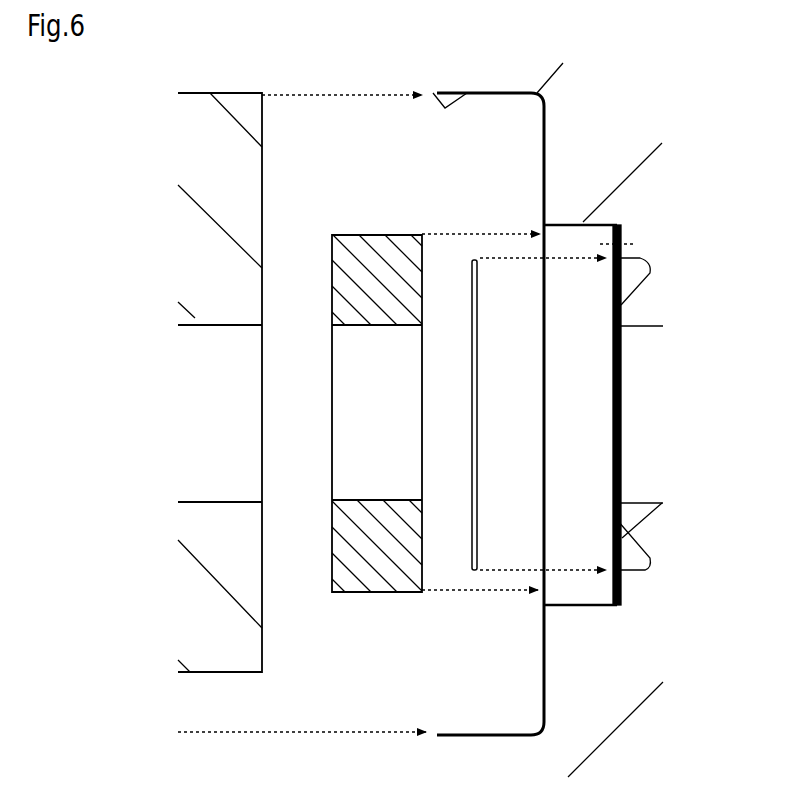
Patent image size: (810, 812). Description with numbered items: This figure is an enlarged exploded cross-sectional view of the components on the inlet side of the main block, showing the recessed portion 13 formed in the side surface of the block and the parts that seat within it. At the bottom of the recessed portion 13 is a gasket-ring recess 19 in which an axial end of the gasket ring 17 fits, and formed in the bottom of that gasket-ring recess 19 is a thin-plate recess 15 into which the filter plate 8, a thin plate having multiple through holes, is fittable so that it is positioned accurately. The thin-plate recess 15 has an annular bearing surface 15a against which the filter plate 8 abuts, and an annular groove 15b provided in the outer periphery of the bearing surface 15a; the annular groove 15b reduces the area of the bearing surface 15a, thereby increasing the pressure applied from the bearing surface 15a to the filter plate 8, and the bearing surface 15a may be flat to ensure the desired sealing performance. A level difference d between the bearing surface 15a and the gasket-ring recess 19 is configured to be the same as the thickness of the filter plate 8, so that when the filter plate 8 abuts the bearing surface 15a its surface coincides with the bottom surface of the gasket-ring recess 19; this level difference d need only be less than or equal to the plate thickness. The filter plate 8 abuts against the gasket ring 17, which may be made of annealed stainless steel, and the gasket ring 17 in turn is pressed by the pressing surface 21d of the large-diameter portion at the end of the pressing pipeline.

The recessed portion 13 is at (437, 93).
The pressing surface 21d is at (262, 244).
The gasket ring 17 is at (378, 235).
The thin-plate recess 15 is at (605, 315).
The gasket-ring recess 19 is at (540, 226).
The level difference d is at (620, 232).
The filter plate 8 is at (468, 565).
The bearing surface 15a is at (617, 520).
The annular groove 15b is at (642, 578).